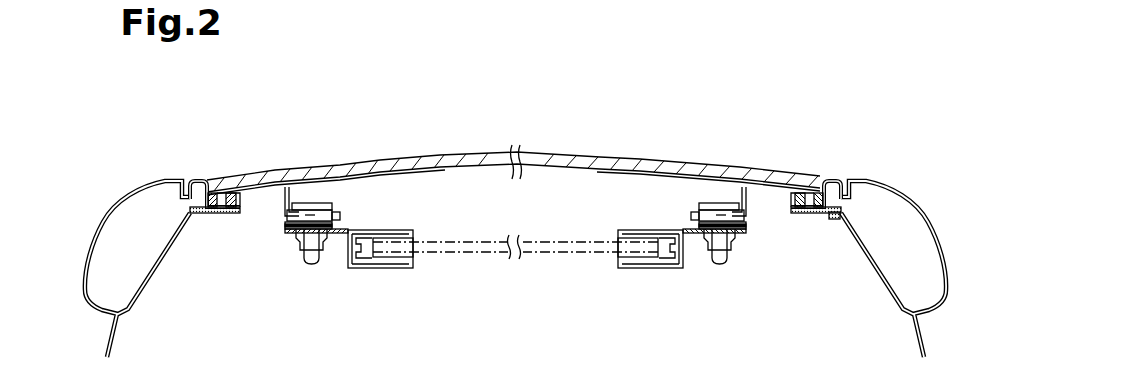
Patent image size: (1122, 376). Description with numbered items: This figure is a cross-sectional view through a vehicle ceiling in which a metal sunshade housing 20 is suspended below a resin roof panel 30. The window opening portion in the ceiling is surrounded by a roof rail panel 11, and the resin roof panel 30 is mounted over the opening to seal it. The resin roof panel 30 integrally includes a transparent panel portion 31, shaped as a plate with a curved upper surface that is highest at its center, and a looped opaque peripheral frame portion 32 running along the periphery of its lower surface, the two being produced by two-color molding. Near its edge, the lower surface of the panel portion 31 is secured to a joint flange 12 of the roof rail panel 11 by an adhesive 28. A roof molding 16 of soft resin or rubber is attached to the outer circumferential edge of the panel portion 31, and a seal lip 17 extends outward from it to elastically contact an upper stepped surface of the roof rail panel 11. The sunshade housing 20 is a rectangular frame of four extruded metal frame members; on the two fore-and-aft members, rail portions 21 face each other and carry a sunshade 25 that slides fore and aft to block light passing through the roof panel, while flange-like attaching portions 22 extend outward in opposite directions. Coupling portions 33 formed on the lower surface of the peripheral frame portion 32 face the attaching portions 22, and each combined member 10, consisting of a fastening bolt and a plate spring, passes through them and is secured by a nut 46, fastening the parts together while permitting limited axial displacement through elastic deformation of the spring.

The combined member 10 is at (311, 201).
The roof rail panel 11 is at (148, 183).
The joint flange 12 is at (223, 215).
The roof molding 16 is at (831, 214).
The seal lip 17 is at (199, 180).
The sunshade housing 20 is at (362, 271).
The rail portion 21 is at (405, 268).
The attaching portion 22 is at (342, 228).
The sunshade 25 is at (541, 257).
The adhesive 28 is at (241, 203).
The resin roof panel 30 is at (483, 151).
The panel portion 31 is at (588, 163).
The peripheral frame portion 32 is at (364, 172).
The coupling portion 33 is at (279, 200).
The nut 46 is at (328, 244).